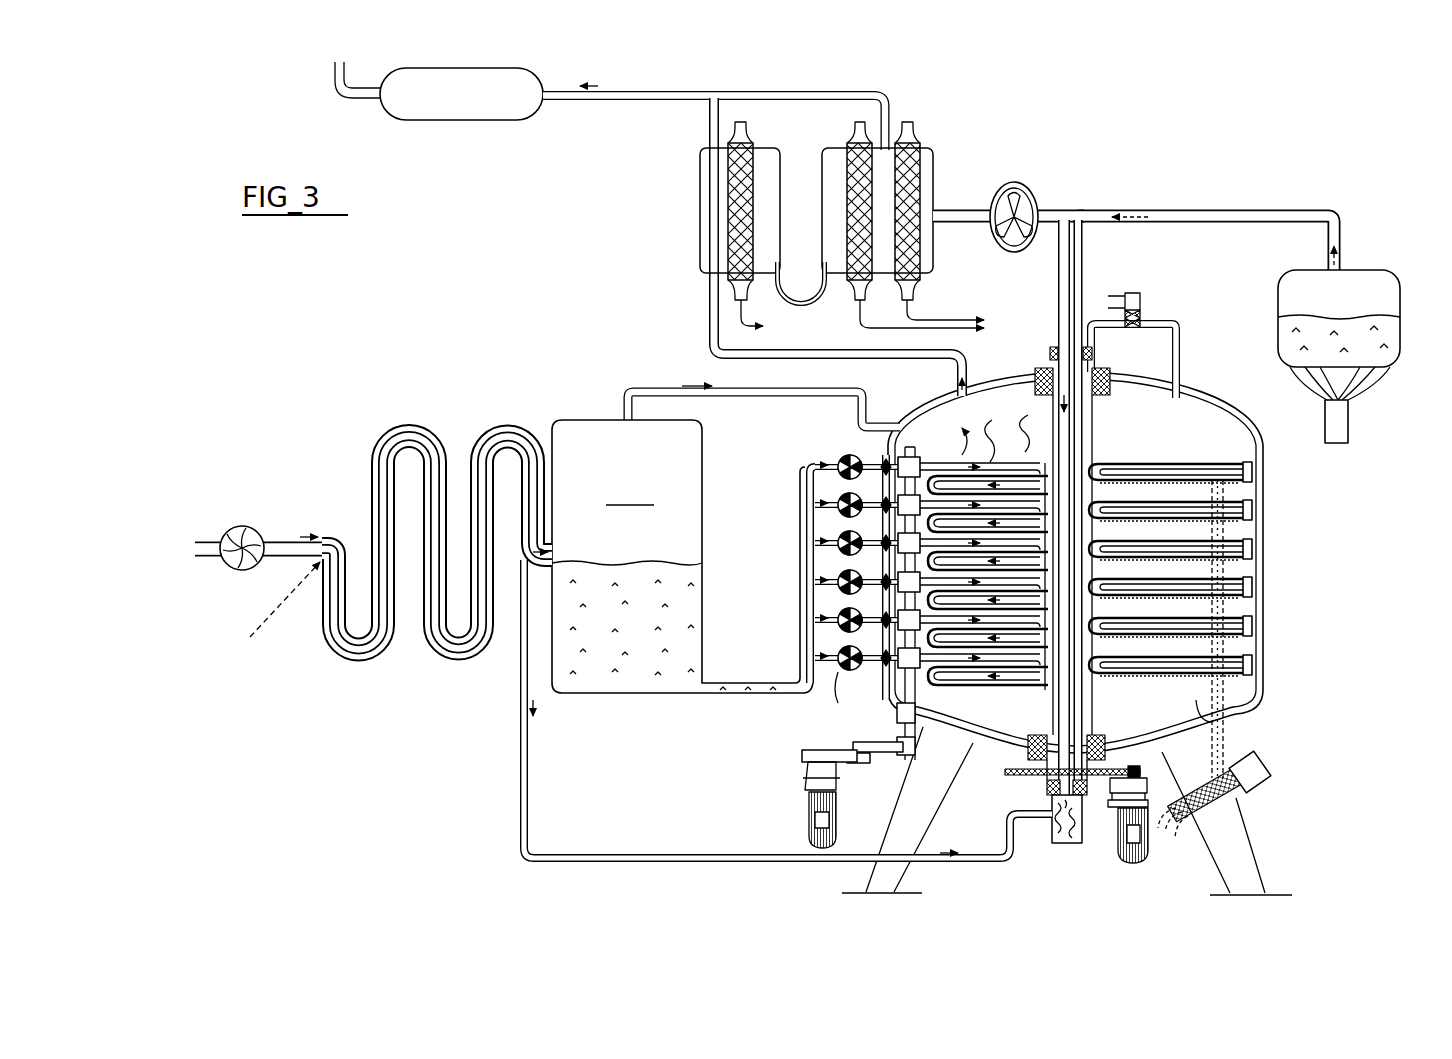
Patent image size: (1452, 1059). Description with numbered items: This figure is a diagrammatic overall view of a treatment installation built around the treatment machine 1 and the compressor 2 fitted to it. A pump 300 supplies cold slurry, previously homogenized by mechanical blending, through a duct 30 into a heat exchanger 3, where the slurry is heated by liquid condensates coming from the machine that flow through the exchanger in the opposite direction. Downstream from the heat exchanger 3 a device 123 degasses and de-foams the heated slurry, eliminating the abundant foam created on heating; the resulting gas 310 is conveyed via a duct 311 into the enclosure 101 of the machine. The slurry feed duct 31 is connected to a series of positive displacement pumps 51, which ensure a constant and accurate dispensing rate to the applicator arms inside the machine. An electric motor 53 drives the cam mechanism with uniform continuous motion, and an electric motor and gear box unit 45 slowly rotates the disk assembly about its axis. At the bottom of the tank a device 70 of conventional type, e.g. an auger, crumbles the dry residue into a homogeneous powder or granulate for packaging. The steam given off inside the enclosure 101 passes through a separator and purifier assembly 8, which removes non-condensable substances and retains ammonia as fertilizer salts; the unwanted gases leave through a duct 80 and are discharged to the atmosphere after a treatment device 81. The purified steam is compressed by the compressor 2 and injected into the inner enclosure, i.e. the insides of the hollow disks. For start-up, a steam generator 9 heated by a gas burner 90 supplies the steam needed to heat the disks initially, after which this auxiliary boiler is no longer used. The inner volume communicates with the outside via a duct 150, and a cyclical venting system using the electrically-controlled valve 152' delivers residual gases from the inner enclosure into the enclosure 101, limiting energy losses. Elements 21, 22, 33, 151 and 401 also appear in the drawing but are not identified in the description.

The treatment machine 1 is at (1270, 550).
The compressor 2 is at (1040, 186).
The heat exchanger 3 is at (468, 418).
The separator and purifier assembly 8 is at (690, 247).
The steam generator 9 is at (1408, 296).
The feed pipe 21 is at (960, 357).
The central pipe 22 is at (1056, 290).
The duct 30 is at (290, 538).
The slurry feed duct 31 is at (803, 598).
The return pipe 33 is at (632, 852).
The electric motor and gear box unit 45 is at (1130, 878).
The positive displacement pumps 51 is at (845, 674).
The electric motor 53 is at (799, 814).
The crumbling and dispensing device 70 is at (1275, 758).
The duct 80 is at (652, 104).
The treatment device 81 is at (455, 113).
The gas burner 90 is at (1350, 422).
The enclosure 101 is at (1208, 442).
The degassing and de-foaming device 123 is at (705, 515).
The duct 150 is at (1102, 428).
The bypass pipe 151 is at (1180, 350).
The electrically-controlled valve 152' is at (1173, 289).
The pump 300 is at (240, 572).
The gas 310 is at (682, 556).
The duct 311 is at (766, 403).
The outlet pipe 401 is at (1066, 845).